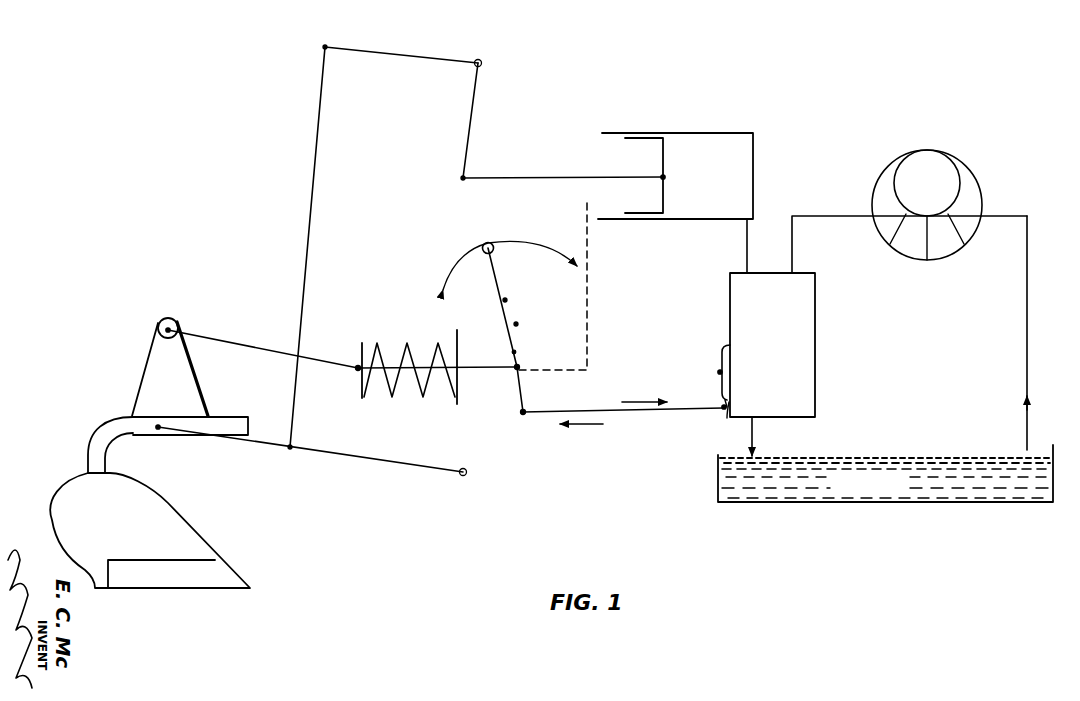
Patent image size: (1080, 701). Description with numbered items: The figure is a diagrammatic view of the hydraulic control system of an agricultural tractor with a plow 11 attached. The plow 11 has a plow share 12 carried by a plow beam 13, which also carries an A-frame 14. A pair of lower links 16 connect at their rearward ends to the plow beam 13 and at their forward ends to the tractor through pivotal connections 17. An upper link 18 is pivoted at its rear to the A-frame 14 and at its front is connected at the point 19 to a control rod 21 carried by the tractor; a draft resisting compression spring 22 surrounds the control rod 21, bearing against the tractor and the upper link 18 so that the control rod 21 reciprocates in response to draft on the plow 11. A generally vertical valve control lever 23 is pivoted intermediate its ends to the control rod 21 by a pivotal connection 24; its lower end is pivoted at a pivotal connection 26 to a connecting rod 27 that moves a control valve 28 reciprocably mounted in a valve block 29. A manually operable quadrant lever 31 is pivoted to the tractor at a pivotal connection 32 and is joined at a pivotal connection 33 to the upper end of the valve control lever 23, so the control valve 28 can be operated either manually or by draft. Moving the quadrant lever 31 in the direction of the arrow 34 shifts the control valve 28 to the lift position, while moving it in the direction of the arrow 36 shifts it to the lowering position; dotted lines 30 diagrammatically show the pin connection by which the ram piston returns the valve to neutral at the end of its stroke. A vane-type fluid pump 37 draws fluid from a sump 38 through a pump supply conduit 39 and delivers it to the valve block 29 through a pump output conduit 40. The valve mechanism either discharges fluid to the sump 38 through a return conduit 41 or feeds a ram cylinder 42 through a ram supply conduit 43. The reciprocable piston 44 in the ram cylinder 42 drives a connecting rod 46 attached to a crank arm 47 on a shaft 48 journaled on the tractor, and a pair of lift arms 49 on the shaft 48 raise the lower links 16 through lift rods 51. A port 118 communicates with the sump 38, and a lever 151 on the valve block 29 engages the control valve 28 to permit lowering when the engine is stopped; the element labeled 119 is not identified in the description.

The plow 11 is at (92, 428).
The plow share 12 is at (185, 545).
The plow beam 13 is at (218, 425).
The A-frame 14 is at (158, 366).
The lower links 16 is at (340, 457).
The pivotal connections 17 is at (462, 476).
The upper link 18 is at (252, 342).
The point 19 is at (355, 372).
The control rod 21 is at (388, 390).
The draft resisting compression spring 22 is at (382, 350).
The valve control lever 23 is at (514, 352).
The pivotal connection 24 is at (516, 370).
The pivotal connection 26 is at (522, 415).
The connecting rod 27 is at (560, 413).
The control valve 28 is at (727, 420).
The valve block 29 is at (806, 400).
The dotted lines 30 is at (590, 318).
The quadrant lever 31 is at (500, 280).
The pivotal connection 32 is at (517, 324).
The pivotal connection 33 is at (503, 302).
The arrow 34 is at (467, 255).
The arrow 36 is at (530, 246).
The fluid pump 37 is at (963, 183).
The sump 38 is at (1036, 478).
The pump supply conduit 39 is at (1029, 328).
The pump output conduit 40 is at (830, 215).
The return conduit 41 is at (753, 440).
The ram cylinder 42 is at (740, 153).
The ram supply conduit 43 is at (745, 240).
The reciprocable piston 44 is at (664, 146).
The connecting rod 46 is at (528, 178).
The crank arm 47 is at (472, 127).
The shaft 48 is at (482, 62).
The lift arms 49 is at (382, 51).
The lift rods 51 is at (315, 157).
The port 118 is at (722, 411).
The valve spool 119 is at (727, 405).
The lever 151 is at (718, 372).